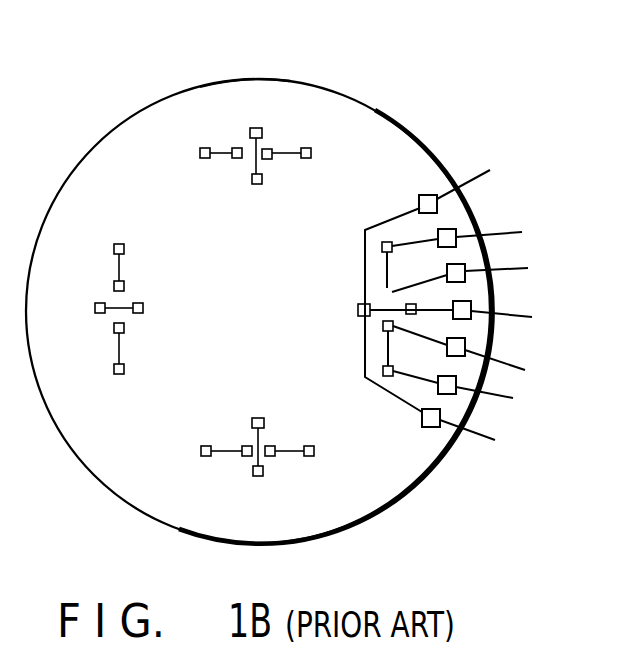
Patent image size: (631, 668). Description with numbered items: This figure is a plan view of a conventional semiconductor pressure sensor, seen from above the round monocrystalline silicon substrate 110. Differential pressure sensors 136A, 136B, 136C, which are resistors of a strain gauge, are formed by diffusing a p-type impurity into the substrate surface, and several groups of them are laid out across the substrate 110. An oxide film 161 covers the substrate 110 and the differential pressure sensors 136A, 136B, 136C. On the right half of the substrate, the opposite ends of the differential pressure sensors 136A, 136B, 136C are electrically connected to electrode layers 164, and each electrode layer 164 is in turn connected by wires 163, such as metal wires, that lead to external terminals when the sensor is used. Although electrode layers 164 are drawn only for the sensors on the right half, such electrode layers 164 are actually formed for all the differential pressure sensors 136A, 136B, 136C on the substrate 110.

The monocrystalline silicon substrate 110 is at (435, 93).
The oxide film 161 is at (238, 80).
The wires 163 is at (470, 181).
The electrode layers 164 is at (428, 195).
The differential pressure sensor 136A is at (221, 154).
The differential pressure sensor 136B is at (284, 154).
The differential pressure sensor 136C is at (257, 128).